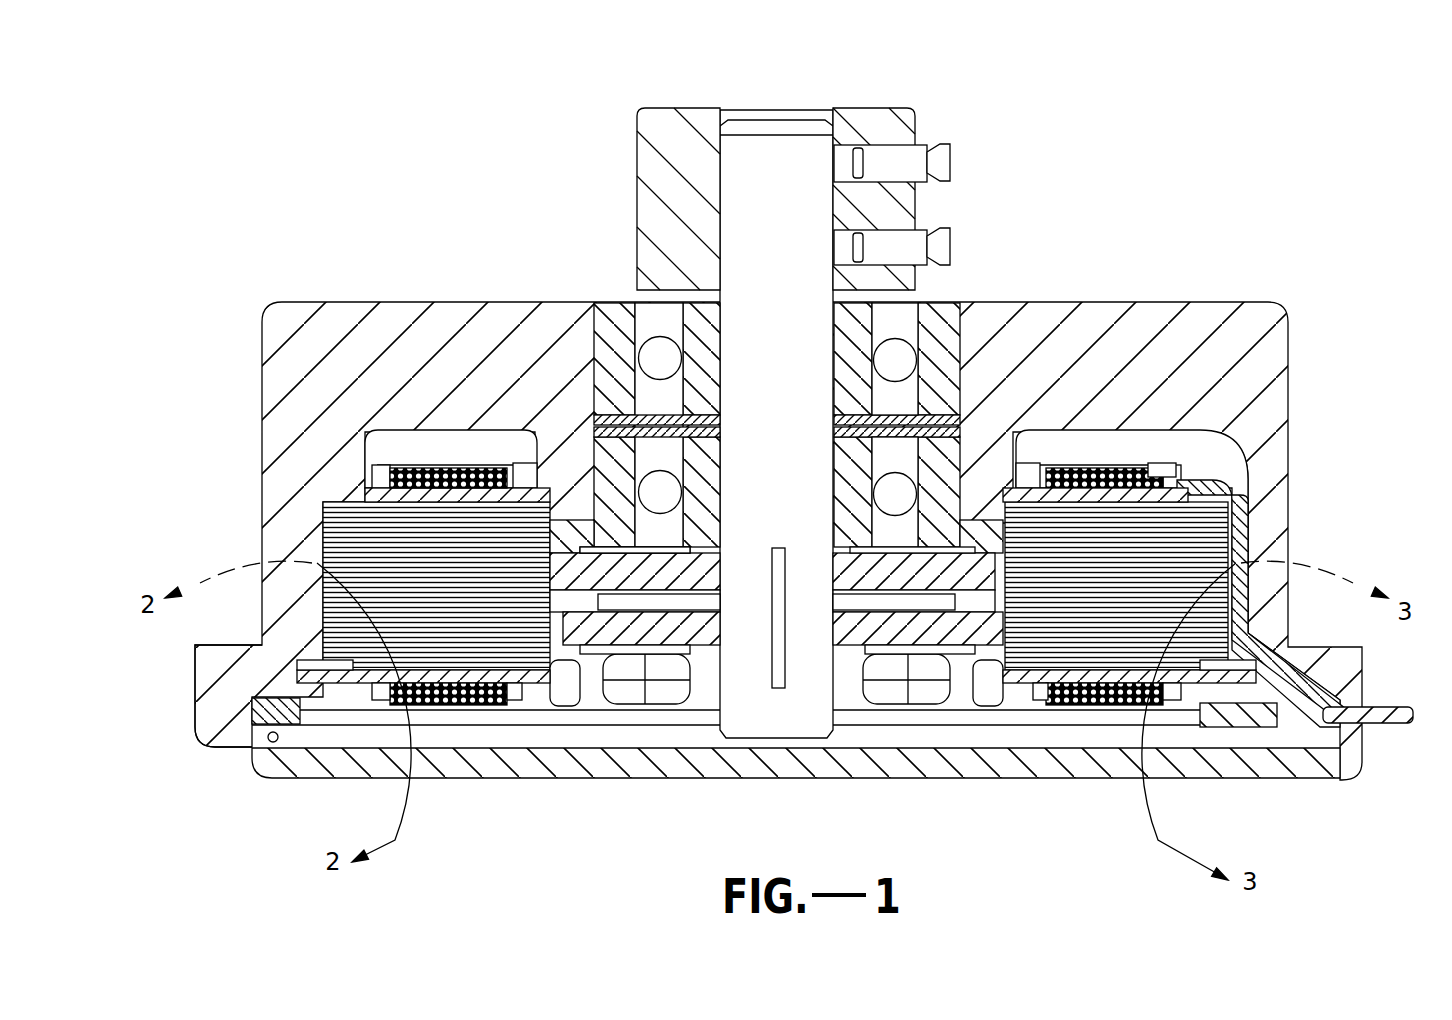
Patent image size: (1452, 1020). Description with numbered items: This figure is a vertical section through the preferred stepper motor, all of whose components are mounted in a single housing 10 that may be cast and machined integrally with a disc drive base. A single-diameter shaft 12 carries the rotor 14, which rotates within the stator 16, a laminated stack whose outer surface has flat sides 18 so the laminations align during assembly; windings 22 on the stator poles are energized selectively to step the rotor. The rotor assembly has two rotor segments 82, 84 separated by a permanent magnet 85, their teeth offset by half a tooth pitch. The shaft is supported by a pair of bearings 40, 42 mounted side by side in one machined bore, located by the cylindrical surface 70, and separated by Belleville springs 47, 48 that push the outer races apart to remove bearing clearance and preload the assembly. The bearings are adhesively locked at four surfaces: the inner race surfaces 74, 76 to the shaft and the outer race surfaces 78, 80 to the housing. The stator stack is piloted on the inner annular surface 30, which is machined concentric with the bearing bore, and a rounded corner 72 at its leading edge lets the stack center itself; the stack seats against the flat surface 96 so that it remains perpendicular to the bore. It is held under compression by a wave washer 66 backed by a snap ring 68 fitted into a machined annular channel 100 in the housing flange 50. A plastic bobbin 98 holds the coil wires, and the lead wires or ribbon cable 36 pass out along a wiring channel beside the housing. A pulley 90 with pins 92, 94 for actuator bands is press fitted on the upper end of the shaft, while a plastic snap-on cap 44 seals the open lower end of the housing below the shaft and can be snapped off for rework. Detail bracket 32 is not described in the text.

The housing 10 is at (1262, 320).
The shaft 12 is at (777, 152).
The rotor 14 is at (905, 620).
The stator 16 is at (325, 525).
The flat sides 18 is at (1215, 568).
The windings 22 is at (1168, 470).
The inner annular surface 30 is at (556, 520).
The left coil bracket 32 is at (355, 550).
The ribbon cable 36 is at (1245, 510).
The bearing 40 is at (943, 477).
The bearing 42 is at (1152, 478).
The snap-on cap 44 is at (1107, 768).
The Belleville spring 47 is at (628, 413).
The Belleville spring 48 is at (636, 412).
The housing flange 50 is at (197, 735).
The wave washer 66 is at (300, 673).
The snap ring 68 is at (250, 716).
The cylindrical surface 70 is at (603, 415).
The rounded corner 72 is at (572, 512).
The inner surface of inner race 74 is at (962, 300).
The inner surface of inner race 76 is at (1016, 440).
The outer surface of outer race 78 is at (975, 320).
The outer surface of outer race 80 is at (1042, 480).
The rotor segment 82 is at (977, 630).
The rotor segment 84 is at (865, 580).
The permanent magnet 85 is at (678, 597).
The pulley 90 is at (882, 128).
The pin 92 is at (950, 158).
The pin 94 is at (950, 245).
The flat surface 96 is at (365, 490).
The plastic bobbin 98 is at (580, 690).
The machined annular channel 100 is at (247, 712).